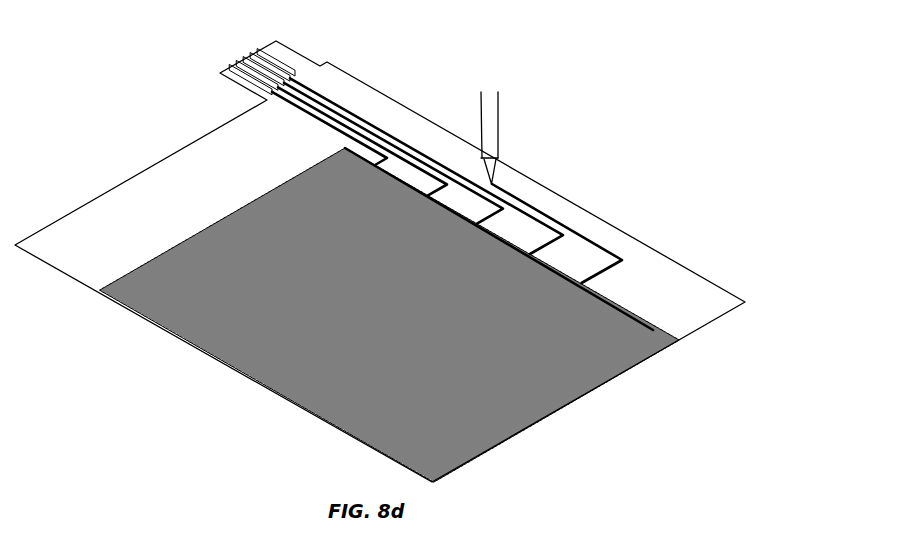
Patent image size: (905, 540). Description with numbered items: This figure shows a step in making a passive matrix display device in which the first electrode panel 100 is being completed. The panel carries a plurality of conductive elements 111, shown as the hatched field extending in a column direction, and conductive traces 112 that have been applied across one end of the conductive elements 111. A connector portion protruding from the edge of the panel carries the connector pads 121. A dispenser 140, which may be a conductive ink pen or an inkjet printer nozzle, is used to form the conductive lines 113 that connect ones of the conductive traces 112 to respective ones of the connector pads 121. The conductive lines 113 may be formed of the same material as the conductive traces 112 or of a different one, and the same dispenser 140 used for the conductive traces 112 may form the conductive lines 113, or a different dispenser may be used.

The first electrode panel 100 is at (737, 278).
The conductive elements 111 is at (553, 402).
The conductive traces 112 is at (632, 311).
The conductive lines 113 is at (585, 239).
The connector pads 121 is at (258, 62).
The dispenser 140 is at (490, 127).